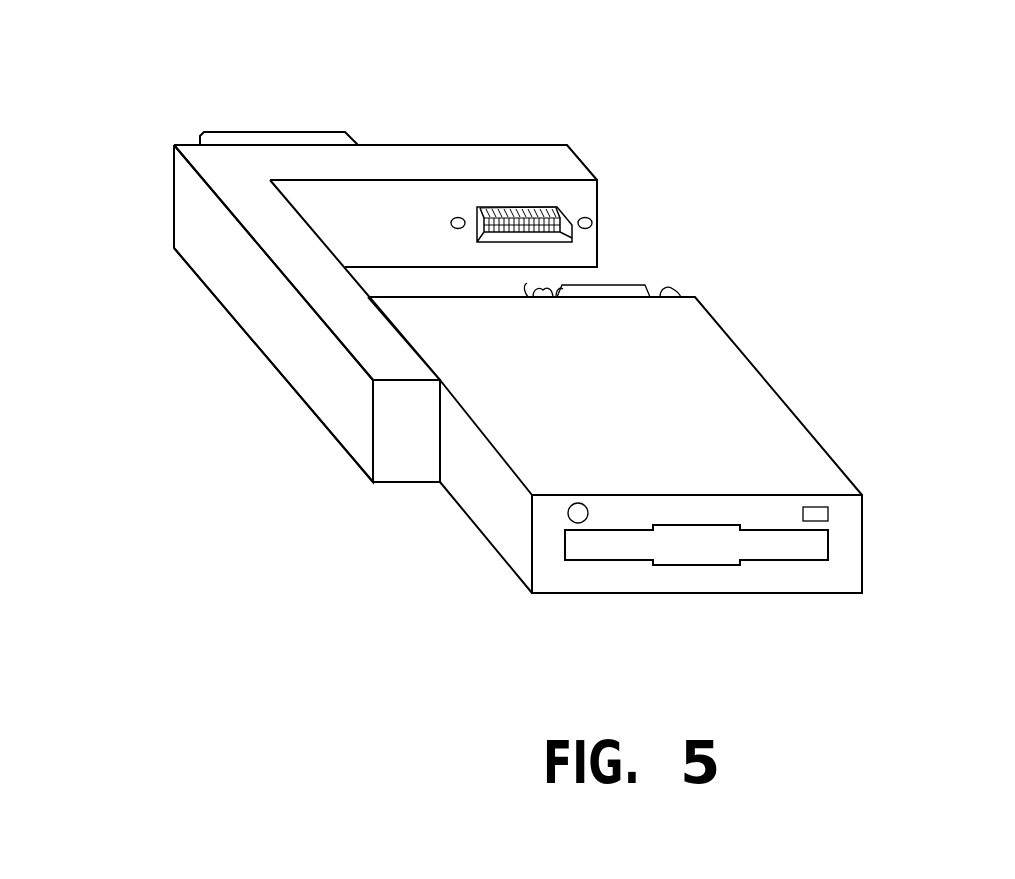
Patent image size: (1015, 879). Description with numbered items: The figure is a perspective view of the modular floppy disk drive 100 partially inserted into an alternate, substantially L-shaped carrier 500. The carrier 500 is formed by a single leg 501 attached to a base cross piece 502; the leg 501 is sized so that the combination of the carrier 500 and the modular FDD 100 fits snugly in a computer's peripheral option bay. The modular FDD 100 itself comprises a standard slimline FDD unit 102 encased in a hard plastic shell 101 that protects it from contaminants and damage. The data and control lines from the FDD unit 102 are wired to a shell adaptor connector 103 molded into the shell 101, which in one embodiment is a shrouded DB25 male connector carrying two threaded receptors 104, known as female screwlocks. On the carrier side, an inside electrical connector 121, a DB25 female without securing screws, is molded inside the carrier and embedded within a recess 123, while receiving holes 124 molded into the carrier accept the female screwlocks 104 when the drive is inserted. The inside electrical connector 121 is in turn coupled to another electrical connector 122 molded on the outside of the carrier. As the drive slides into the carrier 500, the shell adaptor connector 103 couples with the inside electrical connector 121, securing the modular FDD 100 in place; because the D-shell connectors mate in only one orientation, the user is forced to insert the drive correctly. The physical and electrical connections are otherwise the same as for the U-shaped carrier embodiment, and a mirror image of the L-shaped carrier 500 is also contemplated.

The modular floppy disk drive 100 is at (884, 553).
The shell 101 is at (830, 482).
The FDD unit 102 is at (707, 582).
The shell adaptor connector 103 is at (638, 283).
The threaded receptors 104 is at (672, 283).
The inside electrical connector 121 is at (500, 205).
The electrical connector 122 is at (250, 130).
The recess 123 is at (566, 206).
The receiving holes 124 is at (458, 217).
The L-shaped carrier 500 is at (248, 328).
The leg 501 is at (318, 397).
The base cross piece 502 is at (375, 158).